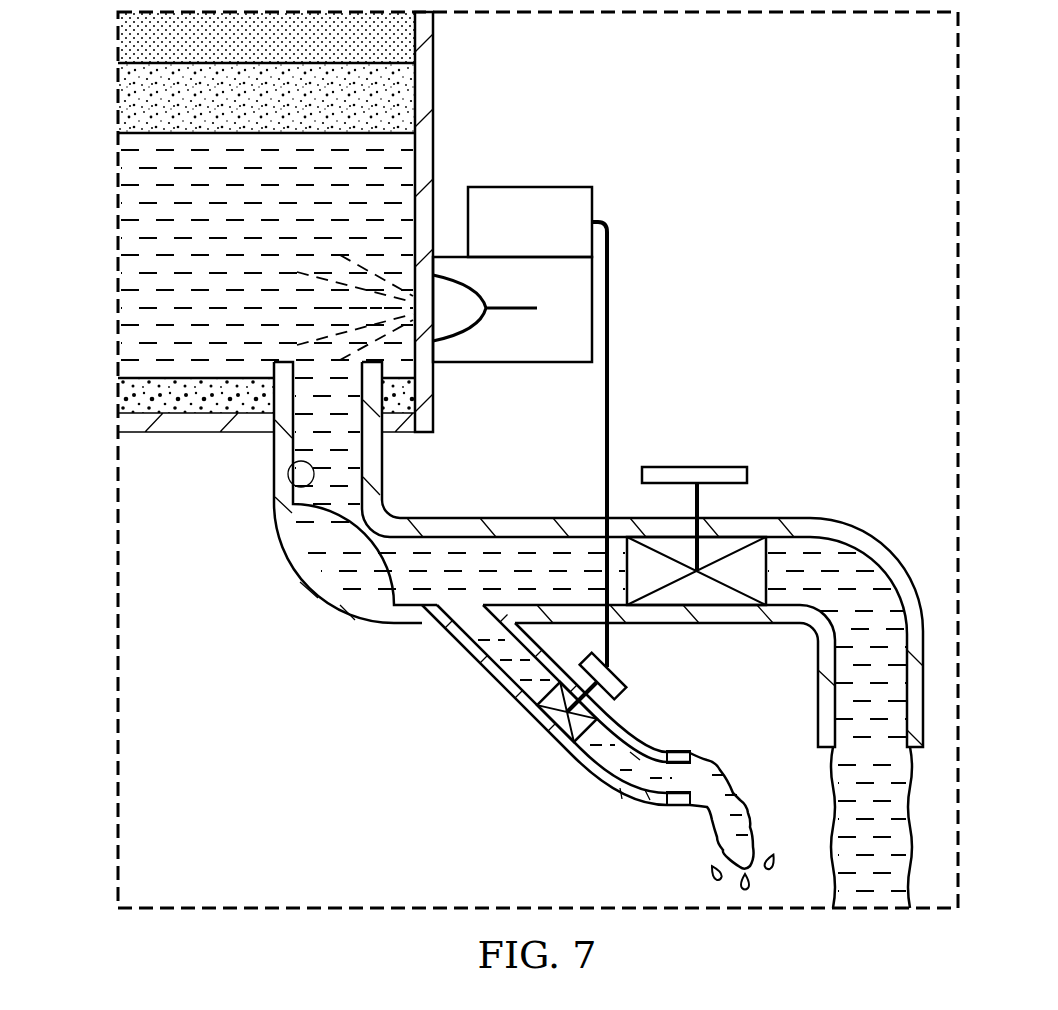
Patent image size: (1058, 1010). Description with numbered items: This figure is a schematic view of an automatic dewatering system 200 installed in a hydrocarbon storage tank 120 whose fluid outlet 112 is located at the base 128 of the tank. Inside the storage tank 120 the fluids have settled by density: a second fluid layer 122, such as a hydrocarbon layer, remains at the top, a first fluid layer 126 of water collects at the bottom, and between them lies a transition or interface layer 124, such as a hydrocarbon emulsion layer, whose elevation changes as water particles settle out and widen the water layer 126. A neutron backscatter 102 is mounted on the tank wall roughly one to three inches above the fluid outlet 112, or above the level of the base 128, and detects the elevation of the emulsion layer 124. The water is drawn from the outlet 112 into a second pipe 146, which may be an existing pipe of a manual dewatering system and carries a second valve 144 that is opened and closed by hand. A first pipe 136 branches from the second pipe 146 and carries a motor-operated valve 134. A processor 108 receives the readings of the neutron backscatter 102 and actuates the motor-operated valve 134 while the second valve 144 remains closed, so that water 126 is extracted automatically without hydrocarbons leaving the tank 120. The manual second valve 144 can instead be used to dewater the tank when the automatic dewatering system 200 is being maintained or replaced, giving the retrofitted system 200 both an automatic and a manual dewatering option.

The neutron backscatter 102 is at (522, 363).
The processor 108 is at (530, 186).
The fluid outlet 112 is at (291, 463).
The hydrocarbon storage tank 120 is at (443, 64).
The second fluid layer 122 is at (118, 43).
The interface layer 124 is at (118, 98).
The first fluid layer 126 is at (118, 266).
The base 128 is at (172, 433).
The motor-operated valve 134 is at (624, 682).
The first pipe 136 is at (497, 678).
The second valve 144 is at (697, 466).
The second pipe 146 is at (523, 525).
The automatic dewatering system 200 is at (779, 186).